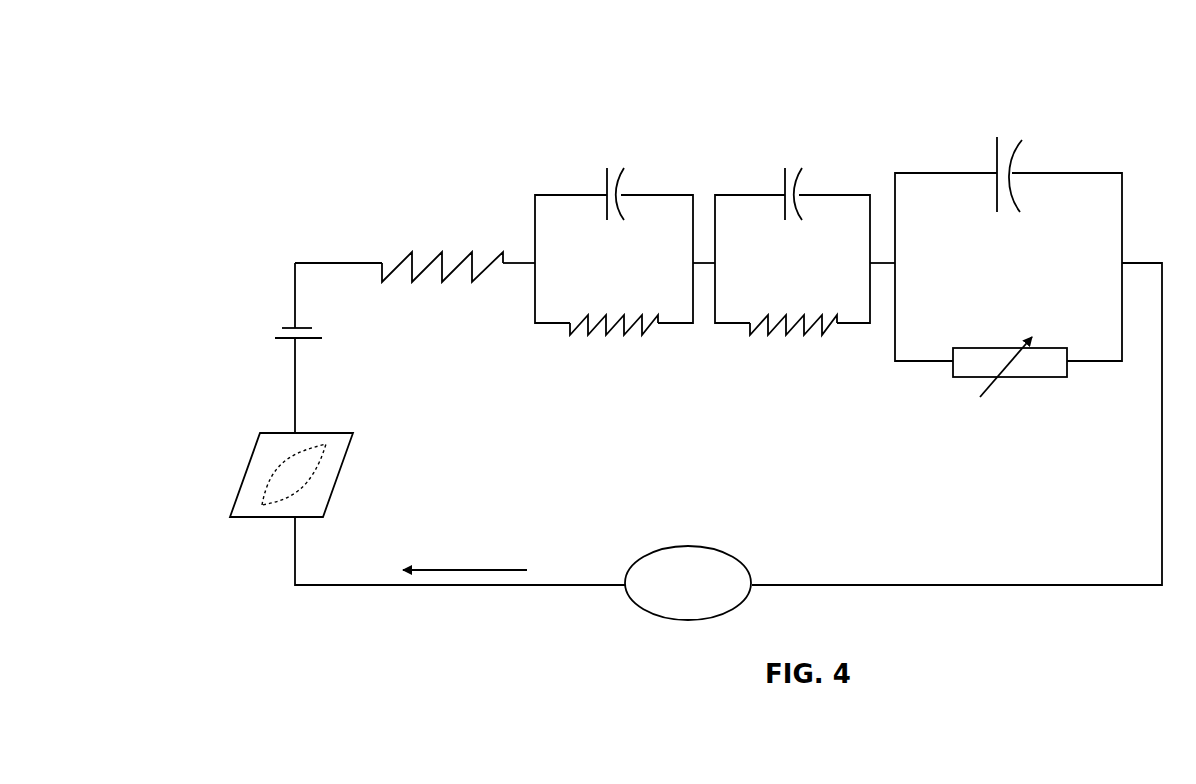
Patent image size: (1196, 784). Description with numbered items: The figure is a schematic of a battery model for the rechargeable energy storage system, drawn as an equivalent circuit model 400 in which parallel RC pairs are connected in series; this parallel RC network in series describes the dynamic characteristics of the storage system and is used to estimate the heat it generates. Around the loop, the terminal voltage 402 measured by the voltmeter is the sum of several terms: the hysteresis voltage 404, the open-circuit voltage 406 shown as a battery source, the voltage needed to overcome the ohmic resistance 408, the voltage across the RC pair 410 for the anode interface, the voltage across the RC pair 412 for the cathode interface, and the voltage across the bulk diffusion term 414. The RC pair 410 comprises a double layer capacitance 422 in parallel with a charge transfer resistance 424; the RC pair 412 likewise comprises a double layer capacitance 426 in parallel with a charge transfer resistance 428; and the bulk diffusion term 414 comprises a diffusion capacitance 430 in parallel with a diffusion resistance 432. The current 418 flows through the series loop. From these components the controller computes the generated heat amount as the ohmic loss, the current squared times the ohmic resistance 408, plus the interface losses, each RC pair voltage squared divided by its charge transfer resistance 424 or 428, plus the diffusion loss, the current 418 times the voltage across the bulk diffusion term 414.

The equivalent circuit model 400 is at (468, 132).
The terminal voltage 402 is at (688, 546).
The hysteresis voltage 404 is at (335, 487).
The open-circuit voltage 406 is at (313, 340).
The ohmic resistance 408 is at (407, 278).
The RC pair for the anode interface 410 is at (613, 249).
The RC pair for the cathode interface 412 is at (792, 251).
The bulk diffusion term 414 is at (1024, 254).
The current 418 is at (497, 567).
The double layer capacitance 422 is at (605, 183).
The charge transfer resistance 424 is at (642, 333).
The double layer capacitance 426 is at (783, 183).
The charge transfer resistance 428 is at (820, 333).
The diffusion capacitance 430 is at (1010, 162).
The diffusion resistance 432 is at (1052, 377).